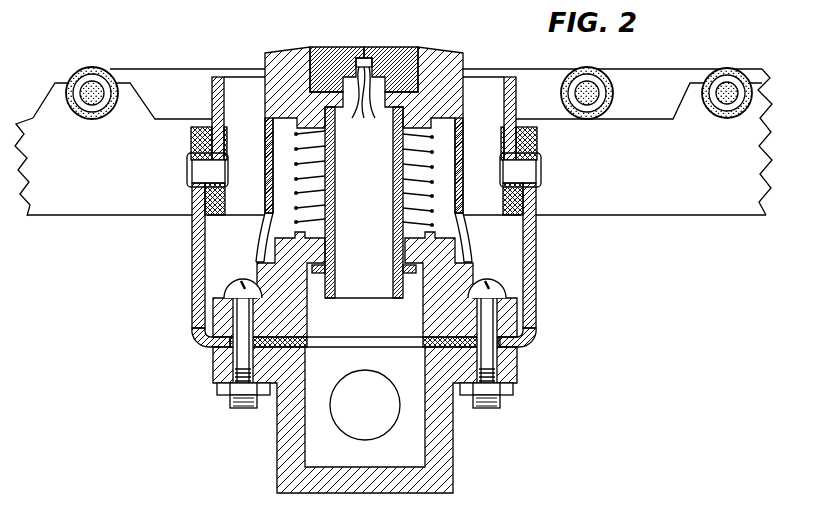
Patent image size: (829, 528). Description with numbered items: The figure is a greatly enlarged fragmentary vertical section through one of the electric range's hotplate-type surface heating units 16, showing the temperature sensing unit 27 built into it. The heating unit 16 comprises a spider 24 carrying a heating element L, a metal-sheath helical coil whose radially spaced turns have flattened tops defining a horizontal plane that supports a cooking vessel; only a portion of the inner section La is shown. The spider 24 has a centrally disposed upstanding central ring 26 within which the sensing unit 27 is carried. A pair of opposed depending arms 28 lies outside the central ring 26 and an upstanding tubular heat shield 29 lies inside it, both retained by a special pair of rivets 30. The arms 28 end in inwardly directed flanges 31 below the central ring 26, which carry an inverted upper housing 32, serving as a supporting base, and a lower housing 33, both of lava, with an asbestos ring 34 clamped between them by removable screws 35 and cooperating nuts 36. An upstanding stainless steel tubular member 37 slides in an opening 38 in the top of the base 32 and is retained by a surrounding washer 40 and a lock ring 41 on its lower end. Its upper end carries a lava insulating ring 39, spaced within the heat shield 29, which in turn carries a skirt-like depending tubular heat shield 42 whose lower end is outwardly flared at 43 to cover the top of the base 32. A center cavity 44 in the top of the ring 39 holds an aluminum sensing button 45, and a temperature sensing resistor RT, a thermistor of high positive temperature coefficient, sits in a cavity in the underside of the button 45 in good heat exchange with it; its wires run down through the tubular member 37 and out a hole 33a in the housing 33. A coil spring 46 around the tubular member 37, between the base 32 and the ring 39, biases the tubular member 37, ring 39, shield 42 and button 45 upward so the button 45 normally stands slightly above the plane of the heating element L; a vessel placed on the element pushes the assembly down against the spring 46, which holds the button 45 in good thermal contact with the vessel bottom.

The surface heating unit 16 is at (711, 47).
The spider 24 is at (104, 192).
The heating element L is at (110, 60).
The inner section La is at (700, 113).
The central ring 26 is at (205, 127).
The temperature sensing unit 27 is at (356, 131).
The depending arms 28 is at (193, 287).
The tubular heat shield 29 is at (218, 76).
The rivets 30 is at (186, 178).
The flanges 31 is at (208, 347).
The upper housing 32 is at (427, 320).
The lower housing 33 is at (365, 420).
The hole 33a is at (382, 428).
The asbestos ring 34 is at (362, 344).
The screws 35 is at (247, 284).
The nuts 36 is at (222, 400).
The tubular member 37 is at (337, 195).
The opening 38 is at (393, 240).
The insulating ring 39 is at (436, 63).
The washer 40 is at (312, 268).
The lock ring 41 is at (328, 270).
The tubular heat shield 42 is at (266, 140).
The outwardly flared lower end 43 is at (263, 255).
The center cavity 44 is at (327, 46).
The sensing button 45 is at (397, 47).
The coil spring 46 is at (437, 153).
The temperature sensing resistor RT is at (361, 57).